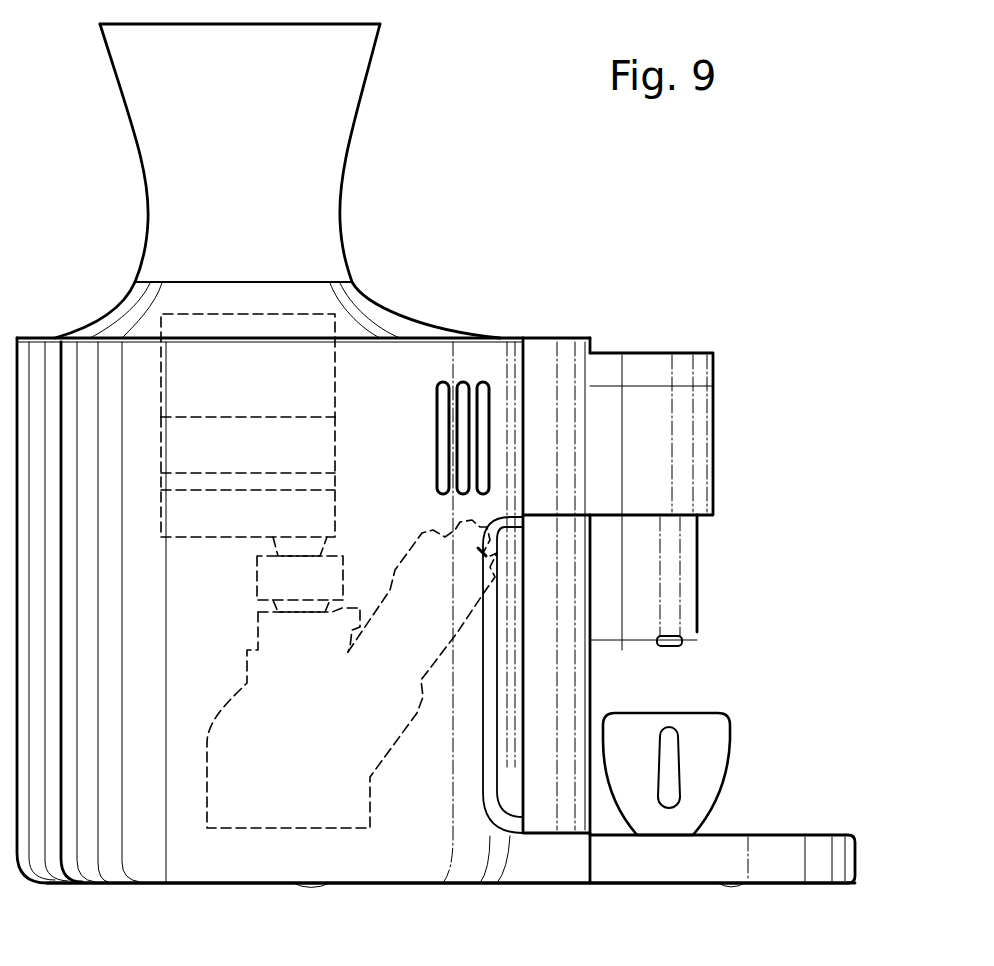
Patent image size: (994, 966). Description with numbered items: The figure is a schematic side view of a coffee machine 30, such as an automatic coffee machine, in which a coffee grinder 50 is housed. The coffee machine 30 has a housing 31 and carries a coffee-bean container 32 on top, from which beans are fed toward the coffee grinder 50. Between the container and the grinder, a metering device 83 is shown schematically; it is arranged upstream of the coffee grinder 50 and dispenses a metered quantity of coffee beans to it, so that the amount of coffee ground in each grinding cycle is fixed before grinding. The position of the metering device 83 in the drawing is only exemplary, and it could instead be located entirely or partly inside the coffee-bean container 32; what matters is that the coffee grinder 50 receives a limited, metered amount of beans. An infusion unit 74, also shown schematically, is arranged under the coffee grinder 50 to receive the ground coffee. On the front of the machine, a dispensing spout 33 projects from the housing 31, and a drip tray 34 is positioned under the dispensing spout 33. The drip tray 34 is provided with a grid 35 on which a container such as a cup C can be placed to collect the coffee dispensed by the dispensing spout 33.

The coffee machine 30 is at (703, 313).
The housing 31 is at (466, 360).
The coffee-bean container 32 is at (328, 170).
The dispensing spout 33 is at (683, 641).
The drip tray 34 is at (778, 873).
The grid 35 is at (786, 832).
The coffee grinder 50 is at (337, 508).
The infusion unit 74 is at (380, 762).
The metering device 83 is at (338, 393).
The cup C is at (737, 737).